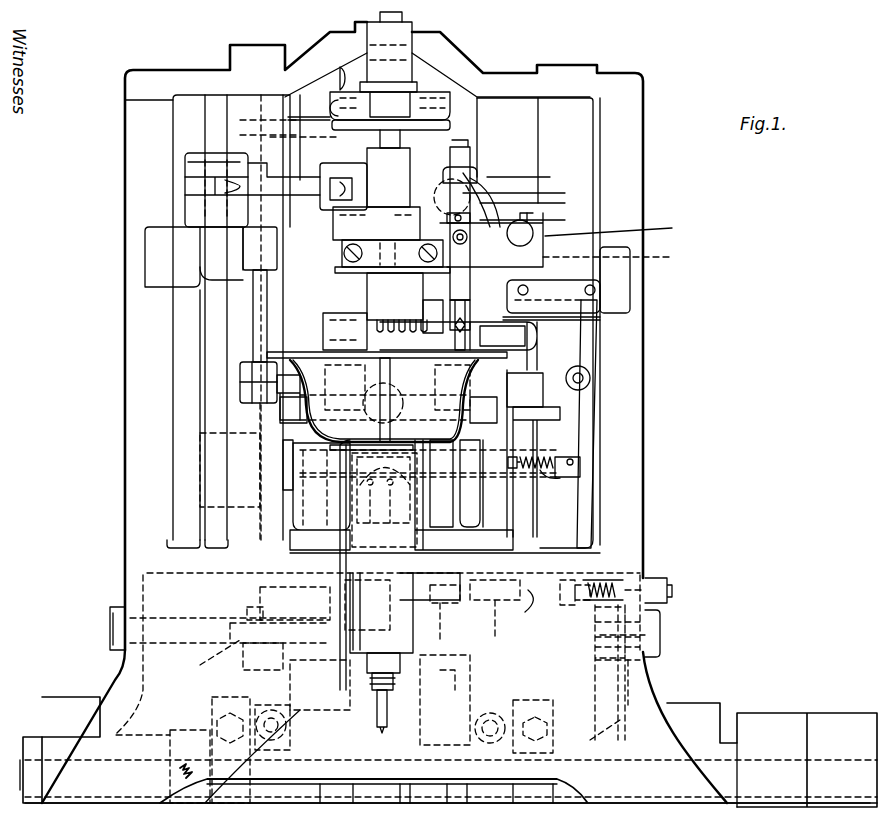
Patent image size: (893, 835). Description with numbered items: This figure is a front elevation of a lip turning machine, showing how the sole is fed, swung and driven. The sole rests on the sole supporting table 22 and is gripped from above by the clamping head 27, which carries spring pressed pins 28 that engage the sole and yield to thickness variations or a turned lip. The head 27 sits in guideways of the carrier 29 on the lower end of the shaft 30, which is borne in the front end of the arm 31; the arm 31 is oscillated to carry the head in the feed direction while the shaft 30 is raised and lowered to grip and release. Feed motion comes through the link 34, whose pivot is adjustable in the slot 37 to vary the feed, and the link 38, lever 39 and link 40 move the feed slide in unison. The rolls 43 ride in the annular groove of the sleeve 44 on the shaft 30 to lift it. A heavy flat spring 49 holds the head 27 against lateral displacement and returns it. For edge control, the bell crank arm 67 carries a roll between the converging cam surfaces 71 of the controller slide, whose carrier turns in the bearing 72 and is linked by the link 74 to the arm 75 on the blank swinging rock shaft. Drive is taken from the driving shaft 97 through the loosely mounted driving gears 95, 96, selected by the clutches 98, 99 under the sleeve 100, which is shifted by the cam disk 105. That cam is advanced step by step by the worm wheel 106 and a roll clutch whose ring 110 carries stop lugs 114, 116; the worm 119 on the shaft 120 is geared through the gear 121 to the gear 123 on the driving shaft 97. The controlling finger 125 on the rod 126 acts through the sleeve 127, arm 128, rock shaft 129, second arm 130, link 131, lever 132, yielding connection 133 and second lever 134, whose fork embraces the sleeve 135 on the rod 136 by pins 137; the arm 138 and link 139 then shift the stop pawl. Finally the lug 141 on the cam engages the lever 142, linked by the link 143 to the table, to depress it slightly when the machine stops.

The sole supporting table 22 is at (415, 360).
The clamping head 27 is at (335, 283).
The spring pressed pins 28 is at (405, 322).
The carrier 29 is at (376, 185).
The shaft 30 is at (380, 13).
The arm 31 is at (405, 42).
The link 34 is at (297, 183).
The slot 37 is at (190, 187).
The link 38 is at (243, 240).
The lever 39 is at (243, 290).
The link 40 is at (240, 395).
The rolls 43 is at (417, 120).
The sleeve 44 is at (427, 117).
The flat spring 49 is at (378, 282).
The arm of bell crank lever 67 is at (530, 345).
The cam surfaces 71 is at (543, 395).
The bearing 72 is at (560, 413).
The link 74 is at (285, 462).
The arm 75 is at (285, 467).
The driving gear 95 is at (630, 710).
The driving gear 96 is at (180, 730).
The driving shaft 97 is at (20, 770).
The clutch 98 is at (532, 700).
The clutch 99 is at (222, 697).
The sleeve 100 is at (400, 690).
The cam disk 105 is at (285, 660).
The worm wheel 106 is at (210, 657).
The ring 110 is at (260, 598).
The stop lug 114 is at (247, 608).
The stop lug 116 is at (330, 600).
The worm 119 is at (300, 700).
The shaft 120 is at (110, 628).
The gear 121 is at (660, 635).
The gear 123 is at (628, 680).
The controlling finger 125 is at (537, 357).
The rod 126 is at (470, 140).
The sleeve 127 is at (470, 222).
The arm 128 is at (508, 227).
The rock shaft 129 is at (625, 228).
The second arm 130 is at (624, 279).
The link 131 is at (600, 322).
The lever 132 is at (600, 345).
The yielding connection 133 is at (585, 478).
The second lever 134 is at (585, 518).
The sleeve 135 is at (590, 573).
The rod 136 is at (672, 590).
The pins 137 is at (560, 632).
The arm 138 is at (525, 615).
The link 139 is at (500, 630).
The lug 141 is at (378, 700).
The lever 142 is at (252, 756).
The link 143 is at (340, 560).